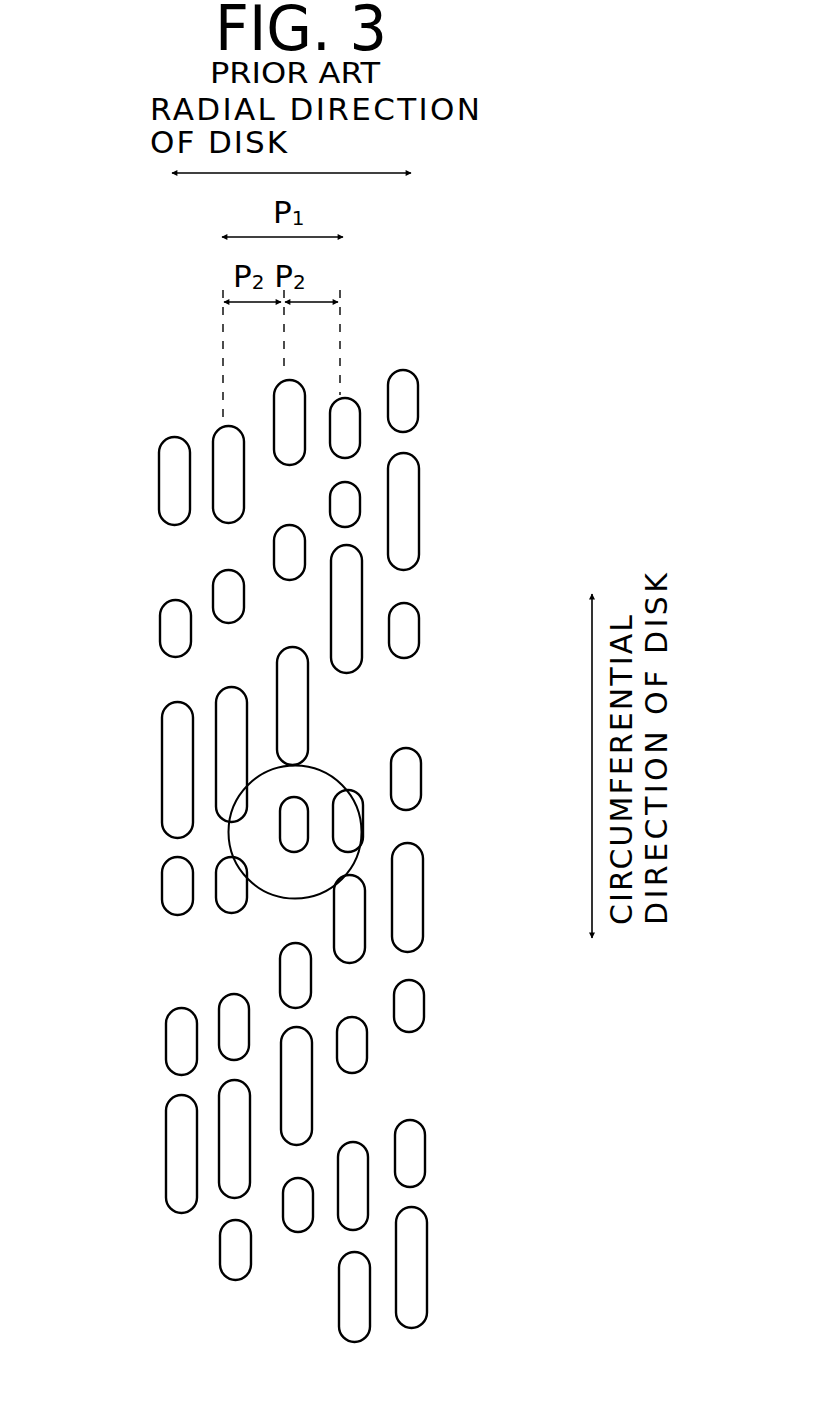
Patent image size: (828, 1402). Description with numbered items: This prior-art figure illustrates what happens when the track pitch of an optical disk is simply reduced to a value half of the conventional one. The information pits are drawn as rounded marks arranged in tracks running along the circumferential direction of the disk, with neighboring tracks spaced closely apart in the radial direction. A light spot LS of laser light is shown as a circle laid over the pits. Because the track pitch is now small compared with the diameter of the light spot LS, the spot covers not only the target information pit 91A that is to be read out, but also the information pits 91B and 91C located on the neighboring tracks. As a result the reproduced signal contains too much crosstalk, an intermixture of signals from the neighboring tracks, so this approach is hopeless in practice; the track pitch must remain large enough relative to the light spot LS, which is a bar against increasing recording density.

The target information pit 91A is at (404, 479).
The information pit on neighboring track 91B is at (350, 825).
The information pit on neighboring track 91C is at (223, 770).
The light spot LS is at (337, 777).